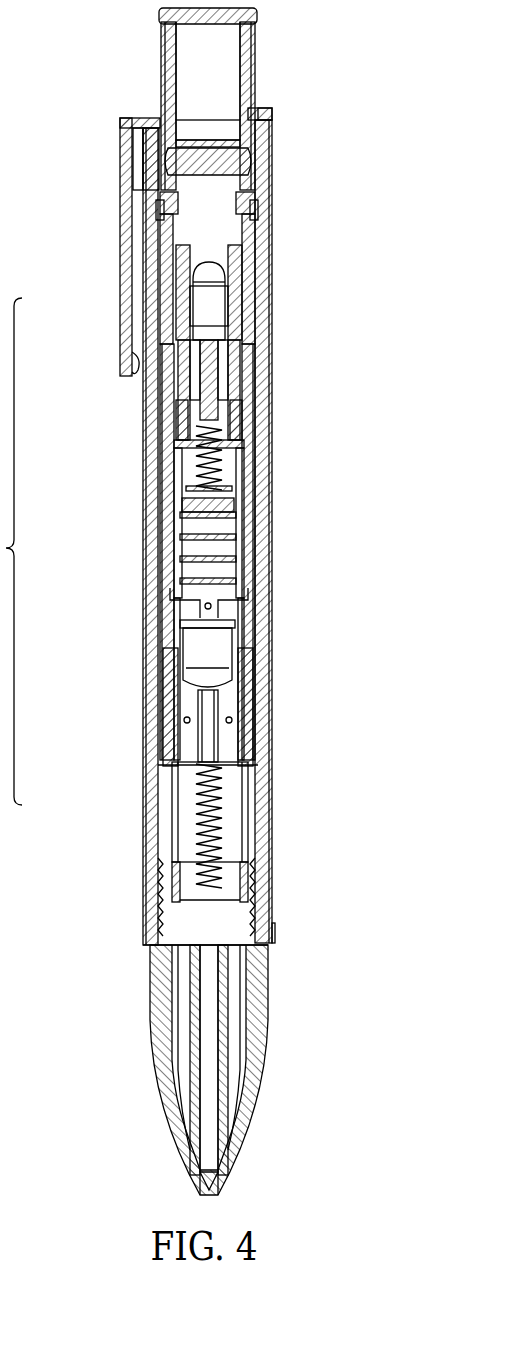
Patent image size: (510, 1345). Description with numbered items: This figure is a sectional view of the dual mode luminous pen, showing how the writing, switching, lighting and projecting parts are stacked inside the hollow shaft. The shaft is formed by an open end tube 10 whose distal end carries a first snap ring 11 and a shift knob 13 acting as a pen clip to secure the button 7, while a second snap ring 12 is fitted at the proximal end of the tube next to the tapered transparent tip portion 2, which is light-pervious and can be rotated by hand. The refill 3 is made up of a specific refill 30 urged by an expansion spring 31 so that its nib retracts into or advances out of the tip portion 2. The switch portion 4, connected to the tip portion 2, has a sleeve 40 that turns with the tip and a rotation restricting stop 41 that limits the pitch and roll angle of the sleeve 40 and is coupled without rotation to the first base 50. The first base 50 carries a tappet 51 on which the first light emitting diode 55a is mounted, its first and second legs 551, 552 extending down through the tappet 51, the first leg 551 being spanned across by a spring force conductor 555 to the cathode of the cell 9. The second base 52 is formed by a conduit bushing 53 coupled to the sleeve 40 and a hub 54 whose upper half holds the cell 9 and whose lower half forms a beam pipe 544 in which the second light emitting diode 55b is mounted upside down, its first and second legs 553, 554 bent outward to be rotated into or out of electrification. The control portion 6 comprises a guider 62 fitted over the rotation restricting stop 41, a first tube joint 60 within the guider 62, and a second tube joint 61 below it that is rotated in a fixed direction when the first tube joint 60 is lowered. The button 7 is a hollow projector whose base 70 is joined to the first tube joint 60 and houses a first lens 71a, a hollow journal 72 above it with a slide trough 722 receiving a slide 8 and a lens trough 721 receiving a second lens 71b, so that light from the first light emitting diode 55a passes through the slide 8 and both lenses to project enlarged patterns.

The tapered transparent tip portion 2 is at (262, 1018).
The refill 3 is at (264, 831).
The switch portion 4 is at (220, 597).
The control portion 6 is at (266, 270).
The button 7 is at (143, 97).
The slide 8 is at (262, 131).
The cell 9 is at (268, 432).
The open end tube 10 is at (160, 890).
The first snap ring 11 is at (262, 112).
The second snap ring 12 is at (150, 960).
The shift knob 13 is at (122, 230).
The refill 30 is at (225, 762).
The expansion spring 31 is at (222, 822).
The sleeve 40 is at (253, 679).
The rotation restricting stop 41 is at (258, 458).
The first base 50 is at (145, 546).
The tappet 51 is at (178, 406).
The second base 52 is at (139, 707).
The conduit bushing 53 is at (185, 752).
The hub 54 is at (196, 688).
The first light emitting diode 55a is at (200, 294).
The second light emitting diode 55b is at (208, 648).
The first tube joint 60 is at (248, 240).
The second tube joint 61 is at (342, 208).
The guider 62 is at (238, 290).
The base 70 is at (165, 98).
The hollow journal 72 is at (172, 68).
The first lens 71a is at (165, 162).
The second lens 71b is at (185, 29).
The first leg 551 is at (192, 362).
The second leg 552 is at (205, 346).
The first leg 553 is at (212, 562).
The second leg 554 is at (222, 586).
The spring force conductor 555 is at (210, 474).
The beam pipe 544 is at (170, 766).
The lens trough 721 is at (162, 13).
The slide trough 722 is at (158, 138).